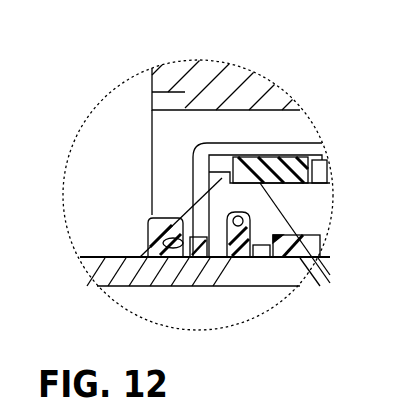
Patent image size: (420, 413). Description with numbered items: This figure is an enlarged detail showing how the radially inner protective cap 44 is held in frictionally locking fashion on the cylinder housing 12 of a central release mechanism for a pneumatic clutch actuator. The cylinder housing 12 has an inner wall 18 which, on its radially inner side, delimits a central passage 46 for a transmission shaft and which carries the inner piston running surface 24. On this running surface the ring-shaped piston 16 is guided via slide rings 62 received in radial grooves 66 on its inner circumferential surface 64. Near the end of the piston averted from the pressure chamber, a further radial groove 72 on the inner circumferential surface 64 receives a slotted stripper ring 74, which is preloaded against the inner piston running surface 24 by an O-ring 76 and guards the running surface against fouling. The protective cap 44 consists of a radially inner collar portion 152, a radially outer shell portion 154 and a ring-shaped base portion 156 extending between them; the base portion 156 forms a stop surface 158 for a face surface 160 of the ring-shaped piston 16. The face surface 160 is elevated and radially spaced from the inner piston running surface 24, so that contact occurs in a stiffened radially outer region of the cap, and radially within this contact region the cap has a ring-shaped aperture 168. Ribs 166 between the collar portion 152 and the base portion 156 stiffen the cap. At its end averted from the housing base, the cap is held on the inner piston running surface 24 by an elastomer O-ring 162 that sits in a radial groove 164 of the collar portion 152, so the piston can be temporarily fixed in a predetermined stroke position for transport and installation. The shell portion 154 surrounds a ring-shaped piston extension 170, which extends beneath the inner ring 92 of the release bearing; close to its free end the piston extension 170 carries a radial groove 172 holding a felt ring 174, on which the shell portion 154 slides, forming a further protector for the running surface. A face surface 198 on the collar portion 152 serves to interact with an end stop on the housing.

The cylinder housing 12 is at (128, 290).
The ring-shaped piston 16 is at (334, 189).
The inner wall 18 is at (278, 258).
The inner piston running surface 24 is at (116, 260).
The protective cap 44 is at (188, 149).
The central passage 46 is at (201, 318).
The slide rings 62 is at (303, 248).
The inner circumferential surface 64 is at (273, 271).
The radial grooves 66 is at (285, 290).
The radial groove 72 is at (240, 258).
The stripper ring 74 is at (255, 258).
The O-ring 76 is at (245, 207).
The inner ring 92 is at (182, 82).
The collar portion 152 is at (170, 231).
The shell portion 154 is at (247, 167).
The base portion 156 is at (210, 203).
The stop surface 158 is at (198, 176).
The face surface 160 is at (180, 210).
The O-ring 162 is at (170, 258).
The radial groove 164 is at (168, 248).
The ribs 166 is at (137, 257).
The ring-shaped aperture 168 is at (206, 258).
The piston extension 170 is at (302, 195).
The radial groove 172 is at (288, 147).
The felt ring 174 is at (232, 210).
The face surface 198 is at (146, 236).